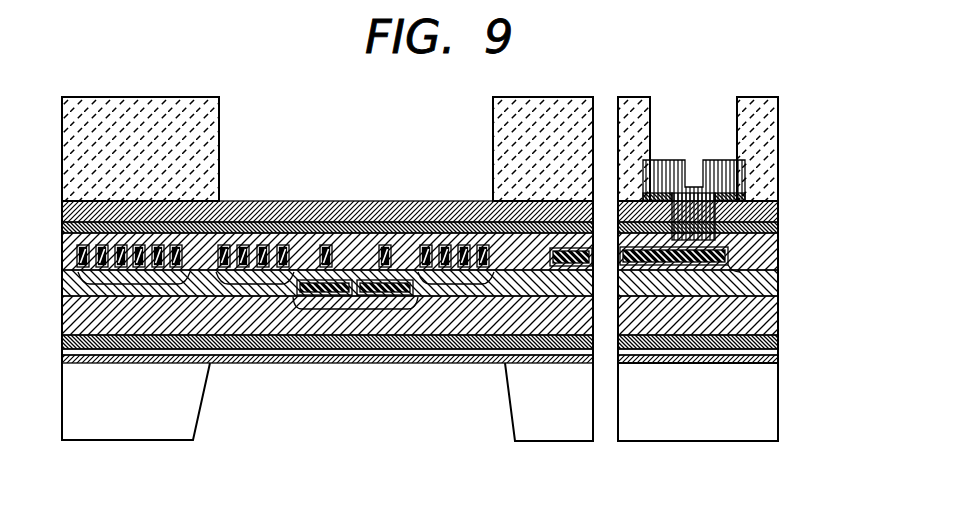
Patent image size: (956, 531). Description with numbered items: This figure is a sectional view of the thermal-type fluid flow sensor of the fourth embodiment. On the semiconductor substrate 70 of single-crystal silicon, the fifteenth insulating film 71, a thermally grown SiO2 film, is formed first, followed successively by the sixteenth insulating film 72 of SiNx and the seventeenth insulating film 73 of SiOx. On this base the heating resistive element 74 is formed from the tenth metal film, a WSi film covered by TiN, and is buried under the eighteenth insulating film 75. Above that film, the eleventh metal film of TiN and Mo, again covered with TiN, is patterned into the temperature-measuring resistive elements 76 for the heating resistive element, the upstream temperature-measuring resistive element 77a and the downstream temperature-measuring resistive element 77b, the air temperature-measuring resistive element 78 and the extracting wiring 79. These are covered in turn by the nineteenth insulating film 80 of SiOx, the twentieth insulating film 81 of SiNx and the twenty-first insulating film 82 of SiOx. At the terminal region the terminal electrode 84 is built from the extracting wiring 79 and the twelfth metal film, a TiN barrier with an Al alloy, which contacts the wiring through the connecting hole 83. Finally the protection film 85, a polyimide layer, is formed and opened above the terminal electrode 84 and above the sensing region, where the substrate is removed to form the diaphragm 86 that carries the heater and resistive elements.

The semiconductor substrate 70 is at (677, 432).
The fifteenth insulating film 71 is at (657, 363).
The sixteenth insulating film 72 is at (762, 341).
The seventeenth insulating film 73 is at (762, 313).
The heating resistive element 74 is at (340, 300).
The eighteenth insulating film 75 is at (762, 284).
The temperature-measuring resistive elements for the heating resistive element 76 is at (357, 242).
The upstream temperature-measuring resistive element 77a is at (250, 280).
The downstream temperature-measuring resistive element 77b is at (457, 290).
The air temperature-measuring resistive element 78 is at (128, 276).
The extracting wiring 79 is at (700, 265).
The nineteenth insulating film 80 is at (762, 253).
The twentieth insulating film 81 is at (422, 226).
The twenty-first insulating film 82 is at (462, 212).
The connecting hole 83 is at (703, 225).
The terminal electrode 84 is at (737, 173).
The protection film 85 is at (770, 125).
The diaphragm 86 is at (556, 428).